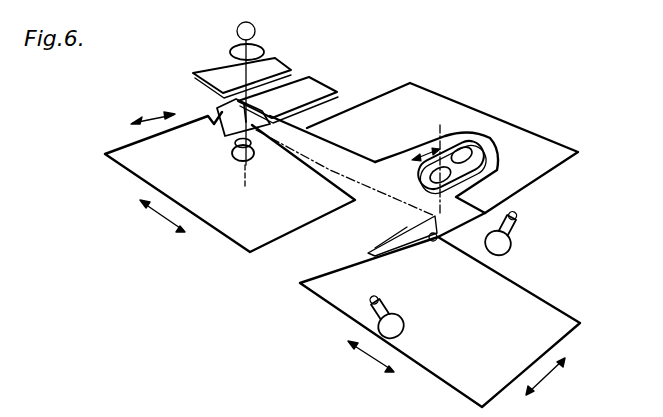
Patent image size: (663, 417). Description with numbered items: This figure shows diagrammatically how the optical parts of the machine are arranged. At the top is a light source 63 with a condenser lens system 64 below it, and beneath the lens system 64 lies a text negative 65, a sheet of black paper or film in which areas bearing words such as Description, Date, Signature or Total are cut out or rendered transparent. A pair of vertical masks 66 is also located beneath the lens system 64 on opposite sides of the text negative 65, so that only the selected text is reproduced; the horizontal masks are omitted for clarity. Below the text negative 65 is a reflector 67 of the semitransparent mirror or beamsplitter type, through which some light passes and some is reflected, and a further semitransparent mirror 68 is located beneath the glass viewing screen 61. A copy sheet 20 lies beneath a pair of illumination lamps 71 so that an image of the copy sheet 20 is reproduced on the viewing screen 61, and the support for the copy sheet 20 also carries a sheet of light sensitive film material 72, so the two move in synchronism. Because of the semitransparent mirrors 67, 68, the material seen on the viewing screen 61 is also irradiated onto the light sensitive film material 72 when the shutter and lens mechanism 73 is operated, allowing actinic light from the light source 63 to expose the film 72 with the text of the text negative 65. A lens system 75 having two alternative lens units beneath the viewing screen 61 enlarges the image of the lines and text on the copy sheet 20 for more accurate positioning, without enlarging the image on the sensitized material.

The copy sheet 20 is at (542, 317).
The glass viewing screen 61 is at (527, 147).
The light source 63 is at (255, 30).
The condenser lens system 64 is at (264, 50).
The text negative 65 is at (200, 78).
The vertical masks 66 is at (288, 62).
The reflector (semitransparent mirror) 67 is at (230, 118).
The semitransparent mirror 68 is at (428, 239).
The illumination lamps 71 is at (511, 247).
The light sensitive film material 72 is at (140, 167).
The shutter and lens mechanism 73 is at (250, 163).
The lens system 75 is at (463, 157).